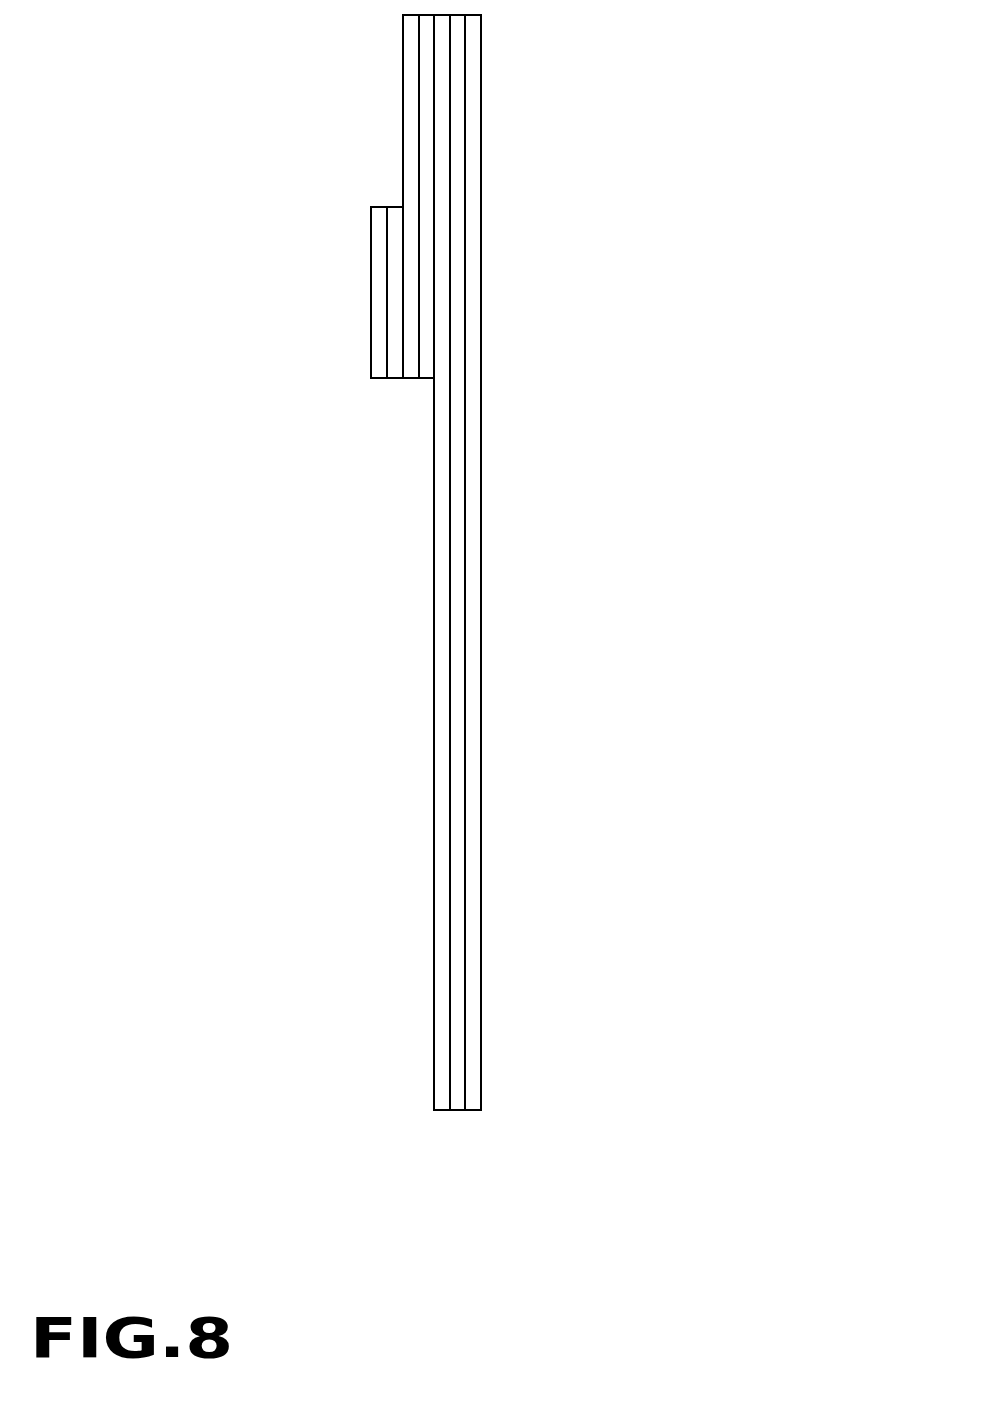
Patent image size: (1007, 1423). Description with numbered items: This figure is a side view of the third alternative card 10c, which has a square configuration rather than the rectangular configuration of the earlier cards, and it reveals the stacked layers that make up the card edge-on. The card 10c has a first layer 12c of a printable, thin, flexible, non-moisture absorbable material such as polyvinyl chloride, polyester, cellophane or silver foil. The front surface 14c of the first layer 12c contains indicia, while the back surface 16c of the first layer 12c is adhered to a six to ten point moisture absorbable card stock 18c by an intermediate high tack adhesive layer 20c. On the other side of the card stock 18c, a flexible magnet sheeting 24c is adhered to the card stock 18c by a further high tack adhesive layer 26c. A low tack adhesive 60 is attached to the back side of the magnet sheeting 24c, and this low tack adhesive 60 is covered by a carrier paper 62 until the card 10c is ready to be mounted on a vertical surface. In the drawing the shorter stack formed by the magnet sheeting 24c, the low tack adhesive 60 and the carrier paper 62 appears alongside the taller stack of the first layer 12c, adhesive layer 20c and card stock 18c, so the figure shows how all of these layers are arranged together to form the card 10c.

The third alternative card 10c is at (458, 586).
The first layer 12c is at (474, 1112).
The front surface 14c is at (482, 803).
The back surface 16c is at (463, 973).
The card stock 18c is at (442, 1112).
The intermediate high tack adhesive layer 20c is at (457, 1111).
The flexible magnet sheeting 24c is at (412, 378).
The high tack adhesive layer 26c is at (426, 378).
The low tack adhesive 60 is at (395, 378).
The carrier paper 62 is at (378, 378).